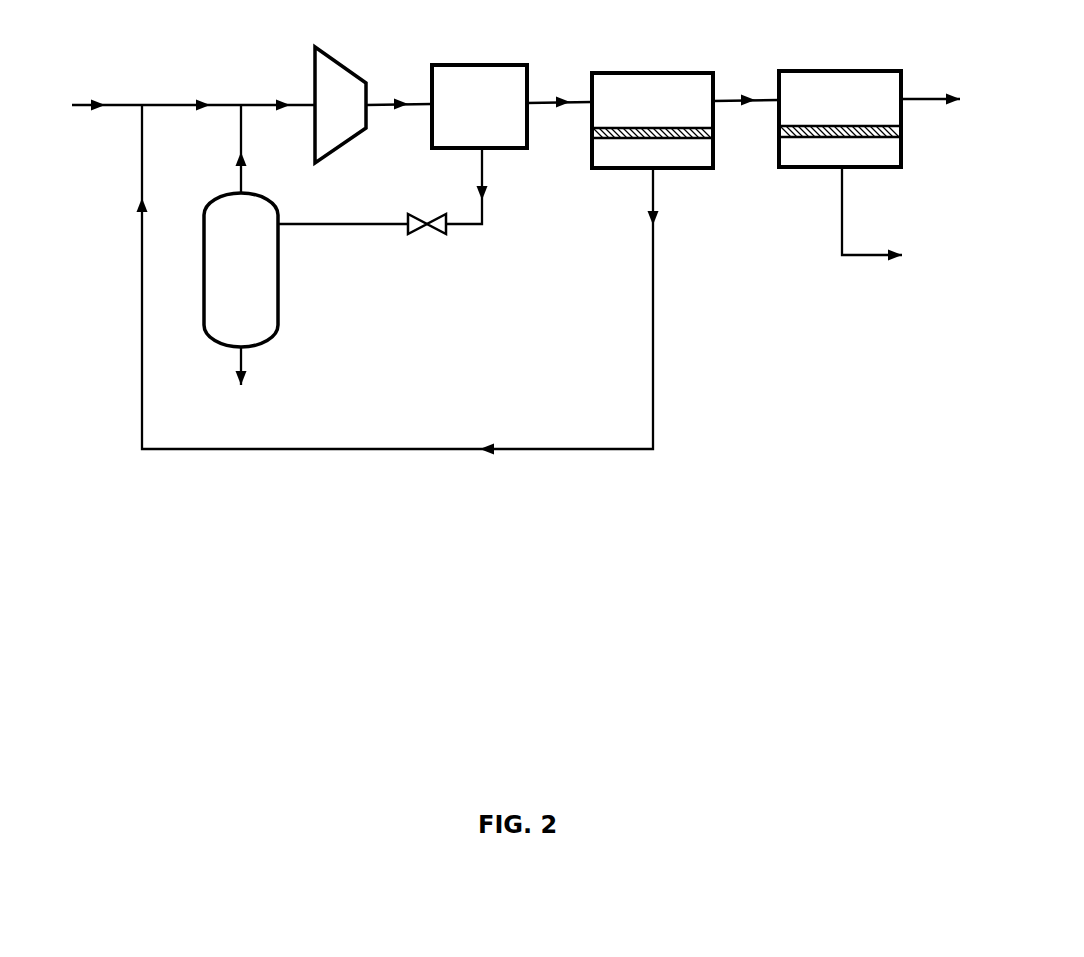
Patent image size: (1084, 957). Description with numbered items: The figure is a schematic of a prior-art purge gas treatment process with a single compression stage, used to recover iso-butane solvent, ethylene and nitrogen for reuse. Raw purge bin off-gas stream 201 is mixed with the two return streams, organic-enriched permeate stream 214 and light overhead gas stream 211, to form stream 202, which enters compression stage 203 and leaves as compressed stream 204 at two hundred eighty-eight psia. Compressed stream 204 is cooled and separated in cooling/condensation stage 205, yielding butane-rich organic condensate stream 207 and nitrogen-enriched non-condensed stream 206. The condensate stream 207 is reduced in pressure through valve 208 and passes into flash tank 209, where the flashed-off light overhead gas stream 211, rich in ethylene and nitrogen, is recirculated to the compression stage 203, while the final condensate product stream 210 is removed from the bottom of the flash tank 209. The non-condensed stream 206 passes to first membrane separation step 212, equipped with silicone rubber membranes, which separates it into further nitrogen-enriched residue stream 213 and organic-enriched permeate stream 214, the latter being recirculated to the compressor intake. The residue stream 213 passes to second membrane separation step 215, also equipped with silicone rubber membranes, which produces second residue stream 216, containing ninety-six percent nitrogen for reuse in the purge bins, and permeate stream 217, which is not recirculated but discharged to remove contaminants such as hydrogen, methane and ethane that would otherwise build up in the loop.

The raw purge bin off-gas stream 201 is at (107, 94).
The stream 202 is at (278, 119).
The compression stage 203 is at (330, 50).
The compressed stream 204 is at (399, 119).
The cooling/condensation stage 205 is at (497, 65).
The nitrogen-enriched non-condensed stream 206 is at (559, 118).
The butane-rich organic condensate stream 207 is at (490, 186).
The valve 208 is at (435, 234).
The flash tank 209 is at (278, 290).
The final condensate product stream 210 is at (239, 382).
The light overhead gas stream 211 is at (218, 149).
The first membrane separation step 212 is at (665, 73).
The nitrogen-enriched residue stream 213 is at (746, 115).
The organic-enriched permeate stream 214 is at (422, 280).
The second membrane separation step 215 is at (855, 71).
The second residue stream 216 is at (936, 114).
The permeate stream 217 is at (894, 217).